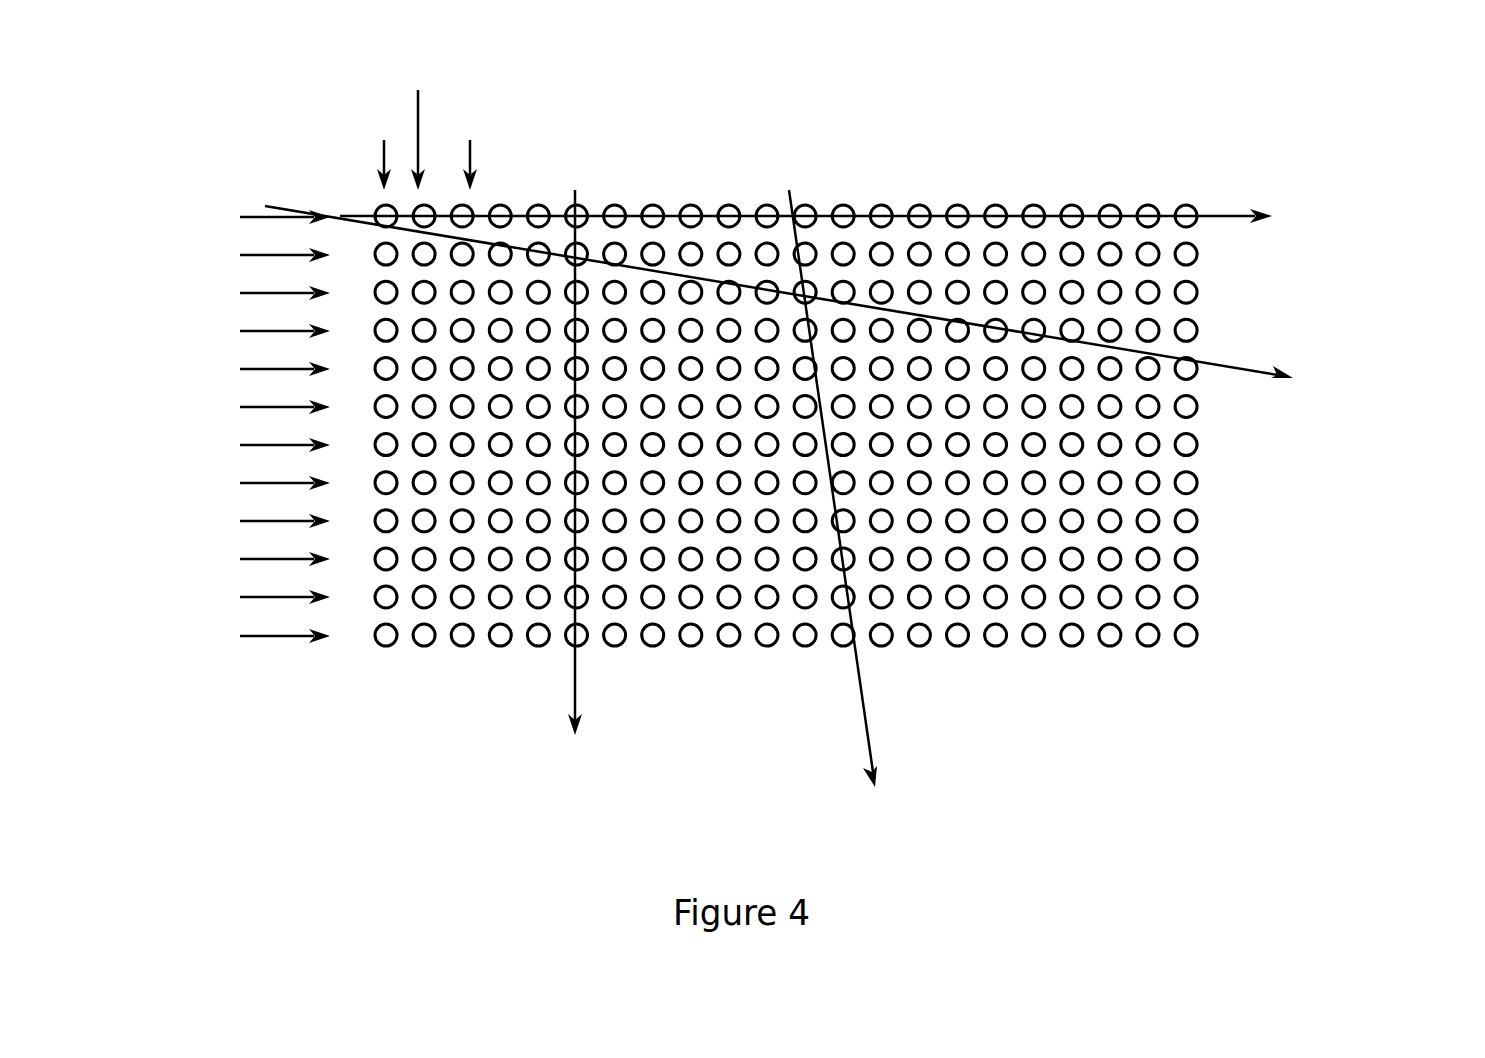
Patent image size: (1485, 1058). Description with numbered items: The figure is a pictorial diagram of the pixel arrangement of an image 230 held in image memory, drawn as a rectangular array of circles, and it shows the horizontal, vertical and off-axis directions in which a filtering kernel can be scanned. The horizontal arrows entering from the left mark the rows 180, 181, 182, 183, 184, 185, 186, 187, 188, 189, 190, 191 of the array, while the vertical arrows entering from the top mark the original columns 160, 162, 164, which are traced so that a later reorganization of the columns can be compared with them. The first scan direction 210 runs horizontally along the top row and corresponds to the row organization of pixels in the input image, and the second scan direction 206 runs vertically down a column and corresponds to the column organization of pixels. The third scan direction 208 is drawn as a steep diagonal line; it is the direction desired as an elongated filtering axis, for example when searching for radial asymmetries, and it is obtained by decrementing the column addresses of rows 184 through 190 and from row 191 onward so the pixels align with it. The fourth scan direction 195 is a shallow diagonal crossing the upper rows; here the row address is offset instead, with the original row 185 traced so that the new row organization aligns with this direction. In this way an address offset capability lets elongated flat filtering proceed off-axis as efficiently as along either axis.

The original column 160 is at (382, 152).
The original column 162 is at (422, 127).
The original column 164 is at (472, 146).
The row 180 is at (258, 222).
The row 181 is at (258, 252).
The row 182 is at (258, 290).
The row 183 is at (258, 328).
The row 184 is at (258, 366).
The row 185 is at (258, 404).
The row 186 is at (258, 442).
The row 187 is at (258, 480).
The row 188 is at (258, 525).
The row 189 is at (258, 564).
The row 190 is at (258, 602).
The row 191 is at (258, 632).
The scan direction 4 195 is at (1245, 367).
The scan direction 2 206 is at (575, 190).
The scan direction 3 208 is at (877, 756).
The scan direction 1 210 is at (1237, 213).
The pixel arrangement of an image 230 is at (786, 360).